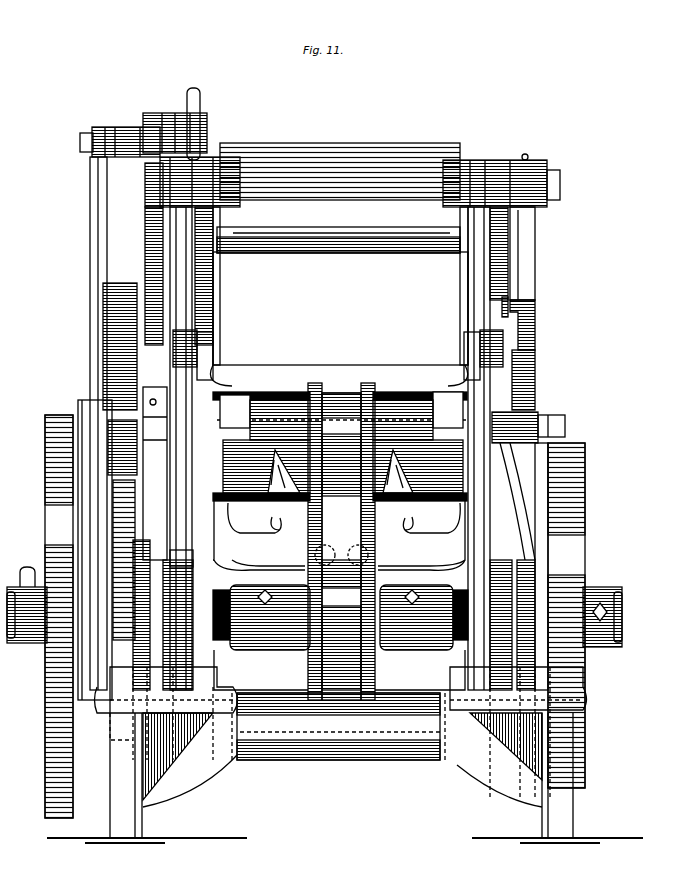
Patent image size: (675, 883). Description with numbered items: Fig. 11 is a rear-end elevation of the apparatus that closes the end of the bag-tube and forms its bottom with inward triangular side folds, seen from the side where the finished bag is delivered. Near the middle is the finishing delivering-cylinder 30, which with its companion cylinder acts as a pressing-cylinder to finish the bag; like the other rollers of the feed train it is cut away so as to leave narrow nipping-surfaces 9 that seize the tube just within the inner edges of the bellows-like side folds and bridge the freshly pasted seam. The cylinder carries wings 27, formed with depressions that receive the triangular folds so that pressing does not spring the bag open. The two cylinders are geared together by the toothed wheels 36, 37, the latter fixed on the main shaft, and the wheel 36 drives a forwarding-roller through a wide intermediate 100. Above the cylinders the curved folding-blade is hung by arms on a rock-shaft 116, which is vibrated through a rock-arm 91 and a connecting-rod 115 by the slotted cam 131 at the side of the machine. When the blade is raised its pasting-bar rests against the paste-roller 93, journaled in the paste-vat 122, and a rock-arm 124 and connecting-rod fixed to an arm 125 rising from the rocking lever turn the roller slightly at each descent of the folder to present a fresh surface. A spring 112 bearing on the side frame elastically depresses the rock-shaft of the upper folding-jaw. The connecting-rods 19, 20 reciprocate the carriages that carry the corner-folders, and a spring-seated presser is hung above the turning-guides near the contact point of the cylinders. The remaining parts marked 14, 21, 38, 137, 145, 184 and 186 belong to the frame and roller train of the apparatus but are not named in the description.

The nipping-surfaces 9 is at (341, 541).
The base beam 14 is at (338, 726).
The connecting-rod 19 is at (160, 480).
The connecting-rod 20 is at (520, 476).
The gear 21 is at (566, 615).
The wings 27 is at (418, 466).
The finishing delivering-cylinder 30 is at (341, 546).
The toothed wheel 36 is at (108, 467).
The toothed wheel 37 is at (113, 576).
The lower roller 38 is at (283, 617).
The rock-arm 91 is at (154, 185).
The paste-roller 93 is at (338, 232).
The wide intermediate 100 is at (118, 285).
The spring 112 is at (523, 325).
The connecting-rod 115 is at (92, 228).
The rock-shaft 116 is at (360, 175).
The paste-vat 122 is at (340, 308).
The rock-arm 124 is at (200, 100).
The arm 125 is at (162, 115).
The slotted cam 131 is at (59, 616).
The roller 137 is at (266, 466).
The column 145 is at (95, 550).
The key 184 is at (405, 604).
The roller 186 is at (424, 617).